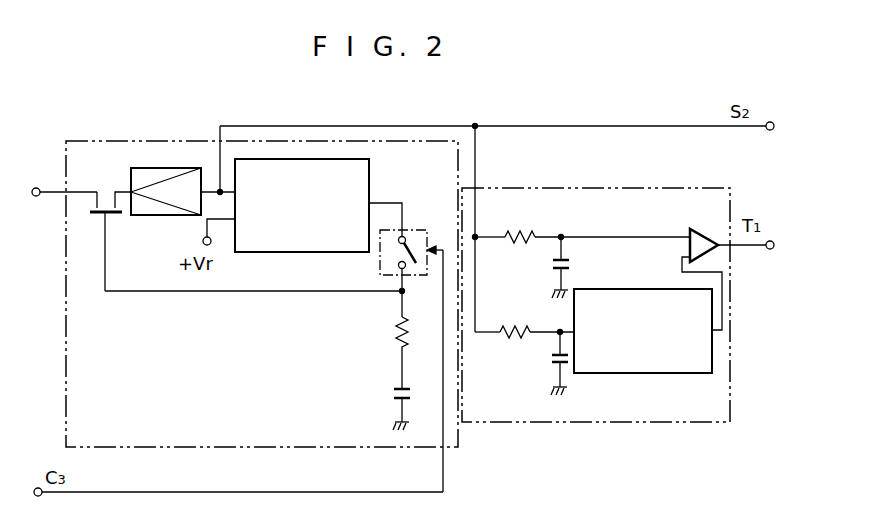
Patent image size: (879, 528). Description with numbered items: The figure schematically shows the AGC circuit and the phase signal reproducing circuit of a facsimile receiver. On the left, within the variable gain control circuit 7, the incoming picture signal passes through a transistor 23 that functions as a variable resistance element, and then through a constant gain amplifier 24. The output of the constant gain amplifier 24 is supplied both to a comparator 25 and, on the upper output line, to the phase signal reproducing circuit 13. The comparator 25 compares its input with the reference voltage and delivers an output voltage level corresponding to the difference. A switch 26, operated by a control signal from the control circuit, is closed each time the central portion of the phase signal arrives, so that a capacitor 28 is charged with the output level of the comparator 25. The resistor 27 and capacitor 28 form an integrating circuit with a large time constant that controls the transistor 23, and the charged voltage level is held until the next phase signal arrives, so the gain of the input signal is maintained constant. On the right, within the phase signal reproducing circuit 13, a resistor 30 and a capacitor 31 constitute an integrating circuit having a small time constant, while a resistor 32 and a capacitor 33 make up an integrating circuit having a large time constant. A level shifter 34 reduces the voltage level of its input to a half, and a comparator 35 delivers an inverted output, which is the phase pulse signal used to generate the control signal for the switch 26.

The variable gain control circuit 7 is at (158, 140).
The phase signal reproducing circuit 13 is at (603, 422).
The transistor 23 is at (102, 190).
The constant gain amplifier 24 is at (156, 216).
The comparator 25 is at (312, 253).
The switch 26 is at (405, 229).
The resistor 27 is at (398, 324).
The capacitor 28 is at (396, 394).
The resistor 30 is at (512, 232).
The capacitor 31 is at (554, 264).
The resistor 32 is at (518, 326).
The capacitor 33 is at (553, 359).
The level shifter 34 is at (634, 289).
The comparator 35 is at (705, 231).